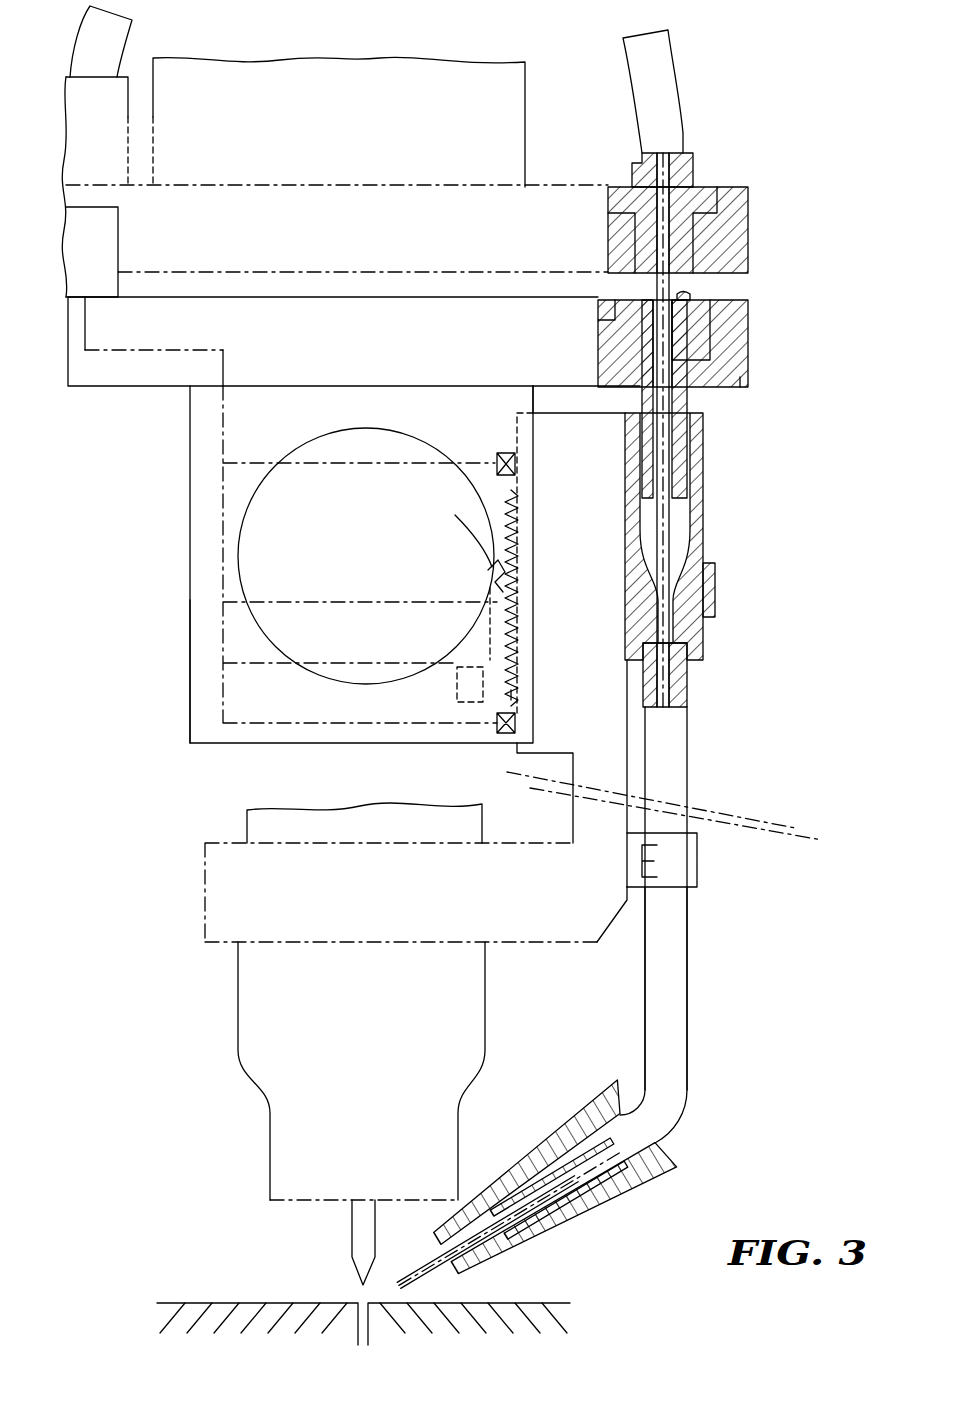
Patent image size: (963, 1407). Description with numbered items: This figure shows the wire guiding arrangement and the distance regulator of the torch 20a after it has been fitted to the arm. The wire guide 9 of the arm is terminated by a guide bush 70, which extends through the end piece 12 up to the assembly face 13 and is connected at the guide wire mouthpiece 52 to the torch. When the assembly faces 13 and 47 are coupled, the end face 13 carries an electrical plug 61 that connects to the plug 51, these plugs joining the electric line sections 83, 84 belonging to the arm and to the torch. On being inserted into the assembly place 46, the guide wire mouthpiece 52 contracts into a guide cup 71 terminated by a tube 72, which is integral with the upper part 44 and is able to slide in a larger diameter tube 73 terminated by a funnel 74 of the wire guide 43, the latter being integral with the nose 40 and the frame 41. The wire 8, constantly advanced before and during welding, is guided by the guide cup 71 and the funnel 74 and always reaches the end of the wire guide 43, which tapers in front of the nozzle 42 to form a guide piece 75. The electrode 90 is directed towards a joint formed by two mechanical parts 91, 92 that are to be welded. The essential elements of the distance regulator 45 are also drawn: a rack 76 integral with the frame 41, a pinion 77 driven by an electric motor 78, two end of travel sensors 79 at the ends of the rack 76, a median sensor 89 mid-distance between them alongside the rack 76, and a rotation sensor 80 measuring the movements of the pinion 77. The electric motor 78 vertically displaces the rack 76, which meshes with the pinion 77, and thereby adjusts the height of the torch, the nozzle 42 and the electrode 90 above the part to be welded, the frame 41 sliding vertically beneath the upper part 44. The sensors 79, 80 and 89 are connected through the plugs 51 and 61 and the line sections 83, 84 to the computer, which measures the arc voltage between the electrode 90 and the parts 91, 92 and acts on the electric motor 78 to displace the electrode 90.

The electric line section 83 is at (128, 24).
The wire guide 9 is at (665, 85).
The electrical plug 61 is at (128, 104).
The end piece 12 is at (737, 195).
The guide bush 70 is at (637, 240).
The plug 51 is at (105, 242).
The assembly face 47 is at (425, 297).
The assembly face 13 is at (735, 275).
The guide wire mouthpiece 52 is at (683, 292).
The upper part 44 is at (758, 348).
The guide cup 71 is at (697, 357).
The tube 72 is at (687, 398).
The assembly place 46 is at (740, 380).
The tube 73 is at (697, 478).
The funnel 74 is at (683, 563).
The end of travel sensors 79 is at (495, 457).
The rack 76 is at (512, 495).
The median sensor 89 is at (458, 530).
The pinion 77 is at (505, 575).
The rotation sensor 80 is at (470, 665).
The electric line section 84 is at (223, 508).
The torch 20a is at (137, 578).
The distance regulator 45 is at (190, 695).
The electric motor 78 is at (512, 686).
The nose 40 is at (700, 733).
The frame 41 is at (610, 815).
The wire guide 43 is at (670, 957).
The nozzle 42 is at (238, 1007).
The guide piece 75 is at (660, 1165).
The mechanical part 91 is at (205, 1300).
The electrode 90 is at (352, 1262).
The mechanical part 92 is at (558, 1300).
The wire 8 is at (405, 1280).